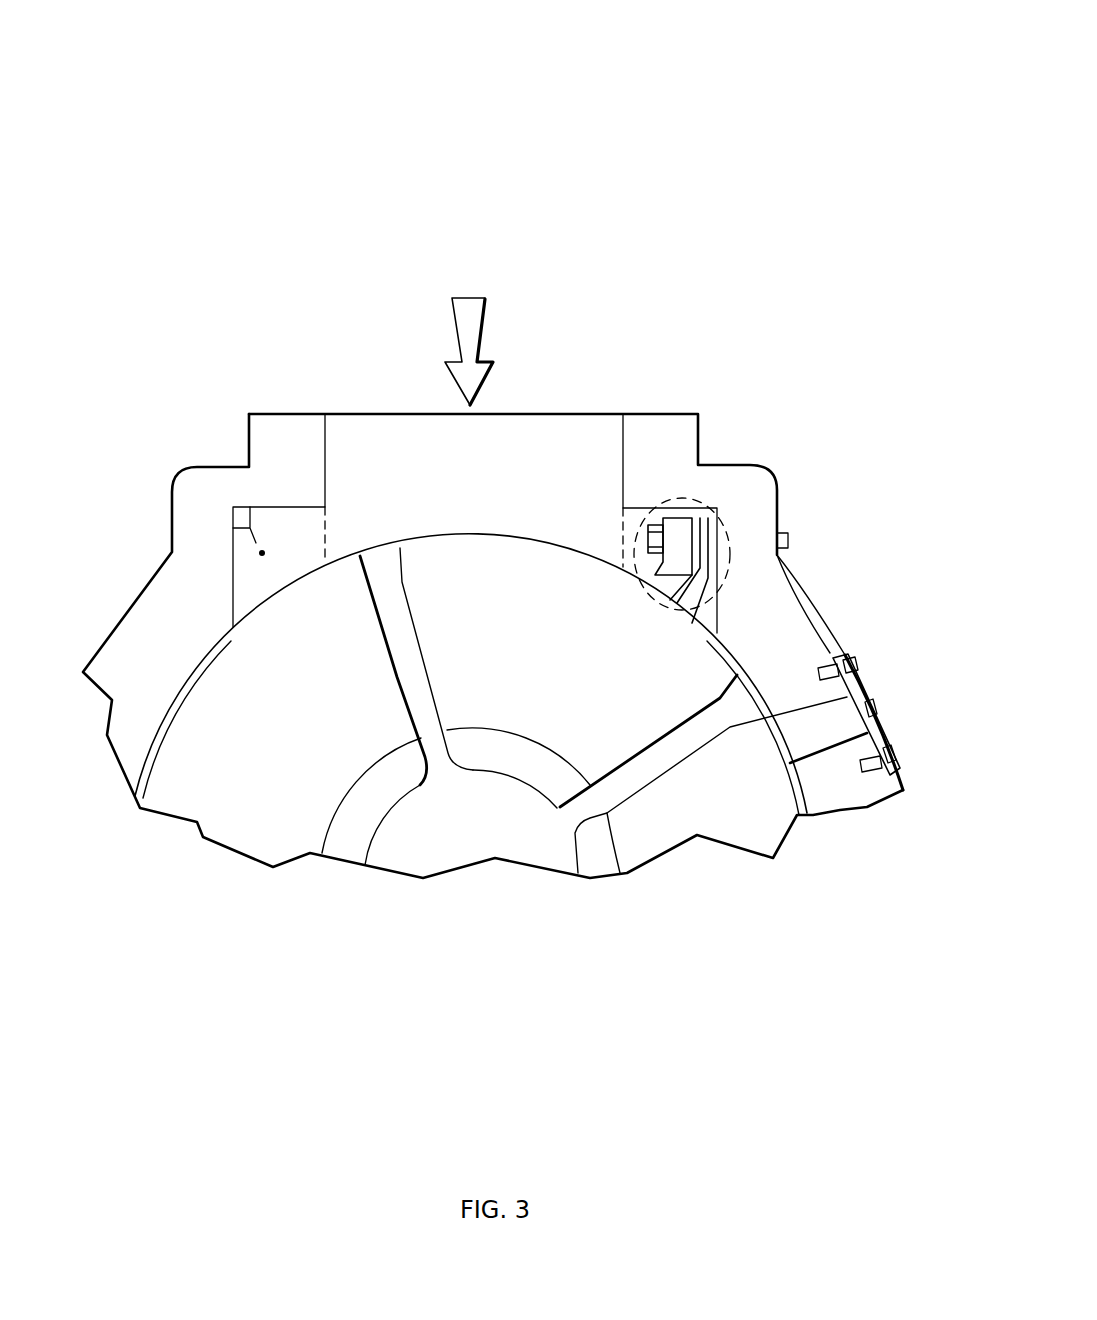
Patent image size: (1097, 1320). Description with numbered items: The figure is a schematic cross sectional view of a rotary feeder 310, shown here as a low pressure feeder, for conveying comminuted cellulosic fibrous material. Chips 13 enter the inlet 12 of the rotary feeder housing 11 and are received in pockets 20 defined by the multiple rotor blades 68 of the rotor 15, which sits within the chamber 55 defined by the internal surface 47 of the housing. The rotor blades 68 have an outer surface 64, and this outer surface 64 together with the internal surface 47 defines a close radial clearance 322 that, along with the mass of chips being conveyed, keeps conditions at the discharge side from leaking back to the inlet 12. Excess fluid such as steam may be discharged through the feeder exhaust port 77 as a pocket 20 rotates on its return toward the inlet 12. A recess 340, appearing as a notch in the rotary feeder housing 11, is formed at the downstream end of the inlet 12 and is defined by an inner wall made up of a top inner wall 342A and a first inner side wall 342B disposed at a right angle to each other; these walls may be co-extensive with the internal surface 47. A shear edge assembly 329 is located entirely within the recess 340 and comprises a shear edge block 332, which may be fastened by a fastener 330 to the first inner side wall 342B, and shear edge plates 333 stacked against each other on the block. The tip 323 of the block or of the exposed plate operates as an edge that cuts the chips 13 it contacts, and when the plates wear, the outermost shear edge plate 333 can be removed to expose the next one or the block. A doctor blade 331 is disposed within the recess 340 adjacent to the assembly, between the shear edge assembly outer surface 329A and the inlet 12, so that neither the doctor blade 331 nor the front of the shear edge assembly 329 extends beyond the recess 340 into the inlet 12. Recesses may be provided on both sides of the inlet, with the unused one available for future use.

The rotary feeder 310 is at (750, 128).
The rotary feeder housing 11 is at (747, 473).
The inlet 12 is at (382, 415).
The chips 13 is at (483, 312).
The rotor 15 is at (597, 850).
The pockets 20 is at (273, 803).
The internal surface 47 is at (177, 697).
The chamber 55 is at (458, 606).
The outer surface 64 is at (383, 550).
The rotor blades 68 is at (625, 790).
The feeder exhaust port 77 is at (820, 725).
The radial clearance 322 is at (218, 647).
The tip 323 is at (672, 602).
The shear edge assembly 329 is at (732, 557).
The shear edge assembly outer surface 329A is at (692, 547).
The fastener 330 is at (790, 540).
The doctor blade 331 is at (673, 563).
The shear edge block 332 is at (707, 603).
The shear edge plates 333 is at (708, 523).
The recess 340 is at (280, 527).
The top inner wall 342A is at (287, 505).
The first inner side wall 342B is at (232, 575).